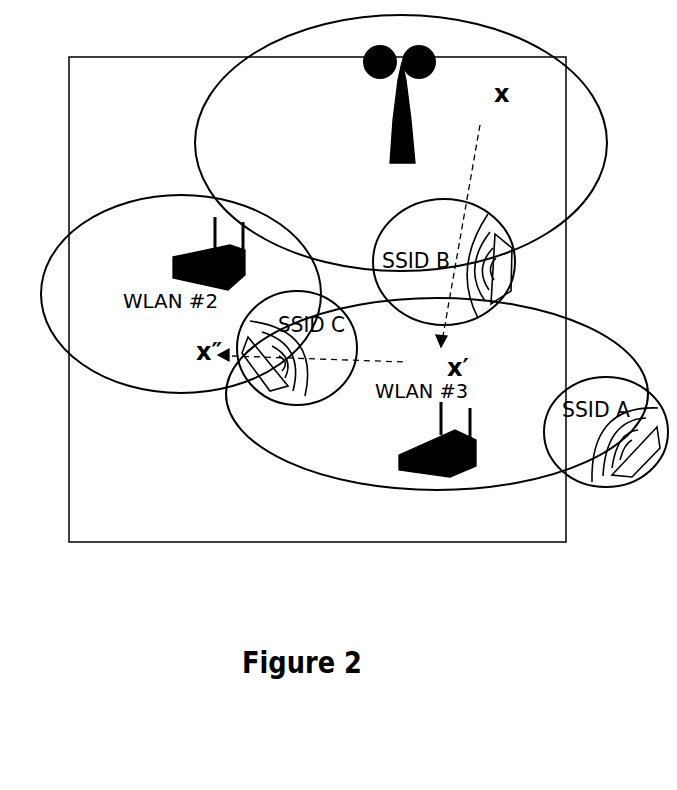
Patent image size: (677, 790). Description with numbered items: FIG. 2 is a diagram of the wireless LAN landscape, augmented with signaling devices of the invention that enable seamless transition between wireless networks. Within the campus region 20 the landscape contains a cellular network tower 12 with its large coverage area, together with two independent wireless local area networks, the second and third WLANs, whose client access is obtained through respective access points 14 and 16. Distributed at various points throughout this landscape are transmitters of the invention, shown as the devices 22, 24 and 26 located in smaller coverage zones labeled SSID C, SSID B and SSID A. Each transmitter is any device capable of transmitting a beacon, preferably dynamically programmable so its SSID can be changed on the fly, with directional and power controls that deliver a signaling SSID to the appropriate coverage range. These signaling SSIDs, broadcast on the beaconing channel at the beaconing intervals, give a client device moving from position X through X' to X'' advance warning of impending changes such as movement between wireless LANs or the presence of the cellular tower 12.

The geographic area / environment 20 is at (160, 57).
The access point 12 is at (385, 119).
The access point 14 is at (185, 255).
The access point 16 is at (478, 433).
The mobile device in SSID C 22 is at (279, 393).
The mobile device in SSID B 24 is at (513, 248).
The mobile device in SSID A 26 is at (648, 465).